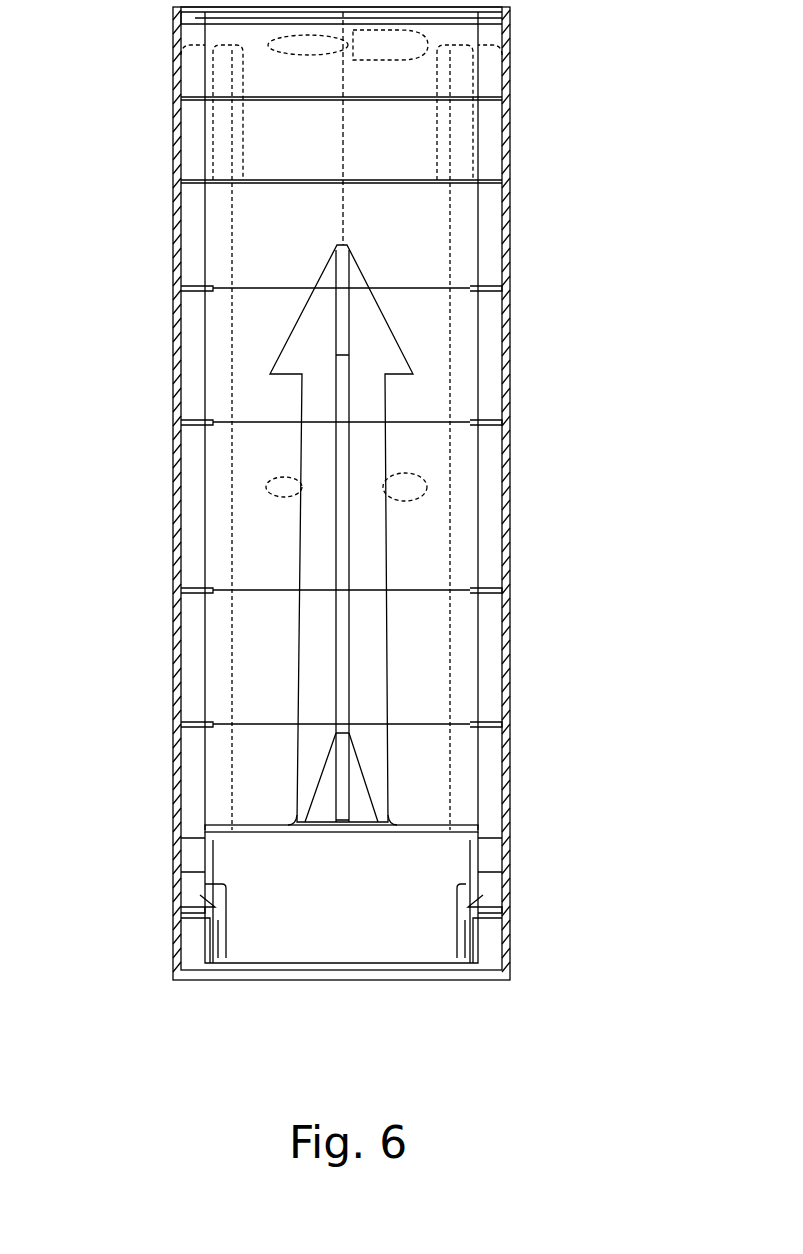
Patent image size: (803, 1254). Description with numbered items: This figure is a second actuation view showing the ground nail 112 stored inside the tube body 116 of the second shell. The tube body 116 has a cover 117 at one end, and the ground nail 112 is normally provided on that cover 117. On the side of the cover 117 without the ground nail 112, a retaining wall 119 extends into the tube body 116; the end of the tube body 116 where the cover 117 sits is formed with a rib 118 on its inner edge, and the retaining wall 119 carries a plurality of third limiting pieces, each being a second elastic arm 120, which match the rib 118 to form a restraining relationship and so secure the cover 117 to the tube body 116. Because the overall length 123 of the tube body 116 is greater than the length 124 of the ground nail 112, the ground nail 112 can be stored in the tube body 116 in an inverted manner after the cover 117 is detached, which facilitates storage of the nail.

The ground nail 112 is at (400, 338).
The tube body 116 is at (178, 112).
The cover 117 is at (424, 980).
The rib 118 is at (200, 935).
The retaining wall 119 is at (278, 930).
The second elastic arm 120 is at (205, 890).
The overall length of the tube body 123 is at (510, 7).
The length of the ground nail 124 is at (60, 245).